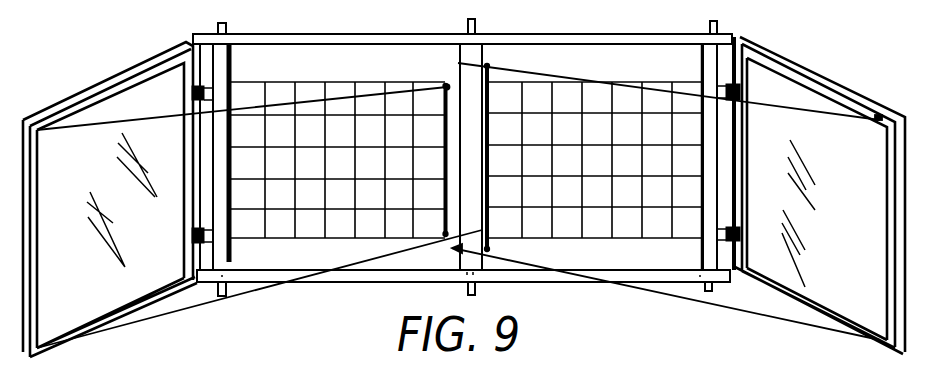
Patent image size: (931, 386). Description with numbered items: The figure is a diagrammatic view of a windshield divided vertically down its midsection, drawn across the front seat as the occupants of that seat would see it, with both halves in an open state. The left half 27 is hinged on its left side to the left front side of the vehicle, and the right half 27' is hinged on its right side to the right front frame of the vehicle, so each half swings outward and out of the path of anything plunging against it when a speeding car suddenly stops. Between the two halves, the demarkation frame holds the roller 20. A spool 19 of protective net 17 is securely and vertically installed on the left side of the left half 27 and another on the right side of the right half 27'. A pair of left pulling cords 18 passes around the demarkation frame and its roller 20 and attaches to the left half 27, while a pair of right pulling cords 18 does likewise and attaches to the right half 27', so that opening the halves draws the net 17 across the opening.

The protective net 17 is at (333, 226).
The pulling cord 18 is at (543, 67).
The spool 19 is at (237, 257).
The roller 20 is at (457, 71).
The left half 27 is at (118, 187).
The right half 27' is at (811, 182).